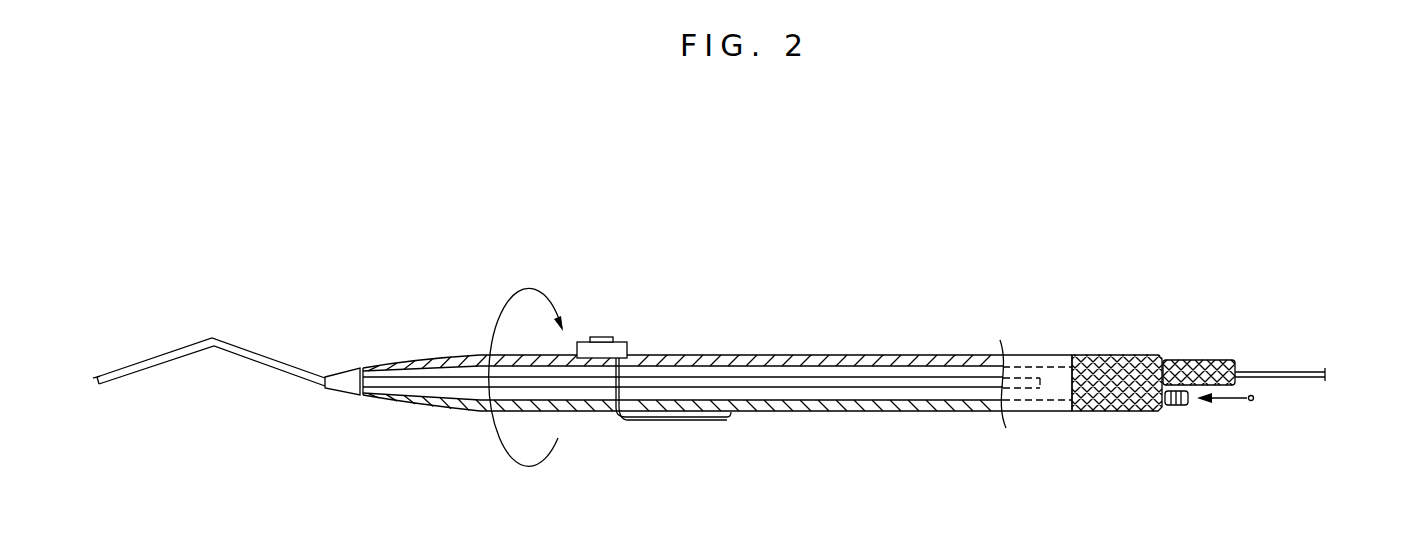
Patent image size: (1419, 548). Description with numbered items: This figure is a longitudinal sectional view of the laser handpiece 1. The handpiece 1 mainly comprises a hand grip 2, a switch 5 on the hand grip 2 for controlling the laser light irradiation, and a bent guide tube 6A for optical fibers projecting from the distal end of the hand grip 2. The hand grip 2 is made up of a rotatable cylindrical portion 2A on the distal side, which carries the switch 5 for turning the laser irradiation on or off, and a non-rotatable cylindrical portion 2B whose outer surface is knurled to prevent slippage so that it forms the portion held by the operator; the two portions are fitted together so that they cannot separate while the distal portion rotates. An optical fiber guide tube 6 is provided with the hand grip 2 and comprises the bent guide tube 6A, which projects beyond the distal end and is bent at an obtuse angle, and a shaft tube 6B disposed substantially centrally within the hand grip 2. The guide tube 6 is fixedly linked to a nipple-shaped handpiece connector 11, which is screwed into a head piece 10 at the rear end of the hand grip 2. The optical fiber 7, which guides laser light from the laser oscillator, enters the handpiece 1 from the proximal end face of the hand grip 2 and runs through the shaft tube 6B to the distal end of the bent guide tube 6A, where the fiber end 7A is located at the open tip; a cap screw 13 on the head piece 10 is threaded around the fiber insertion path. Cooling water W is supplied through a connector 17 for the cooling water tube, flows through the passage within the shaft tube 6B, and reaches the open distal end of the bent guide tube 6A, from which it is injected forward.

The handpiece 1 is at (809, 279).
The hand grip 2 is at (692, 338).
The rotatable cylindrical portion 2A is at (455, 407).
The non-rotatable cylindrical portion 2B is at (875, 405).
The switch 5 is at (618, 340).
The optical fiber guide tube 6 is at (267, 336).
The bent guide tube 6A is at (220, 352).
The shaft tube 6B is at (733, 413).
The optical fiber 7 is at (1284, 372).
The distal end of cooling water tube 7A is at (97, 386).
The head piece 10 is at (1115, 355).
The handpiece connector 11 is at (1058, 388).
The cap screw 13 is at (1203, 360).
The connector for the cooling water tube 17 is at (1175, 405).